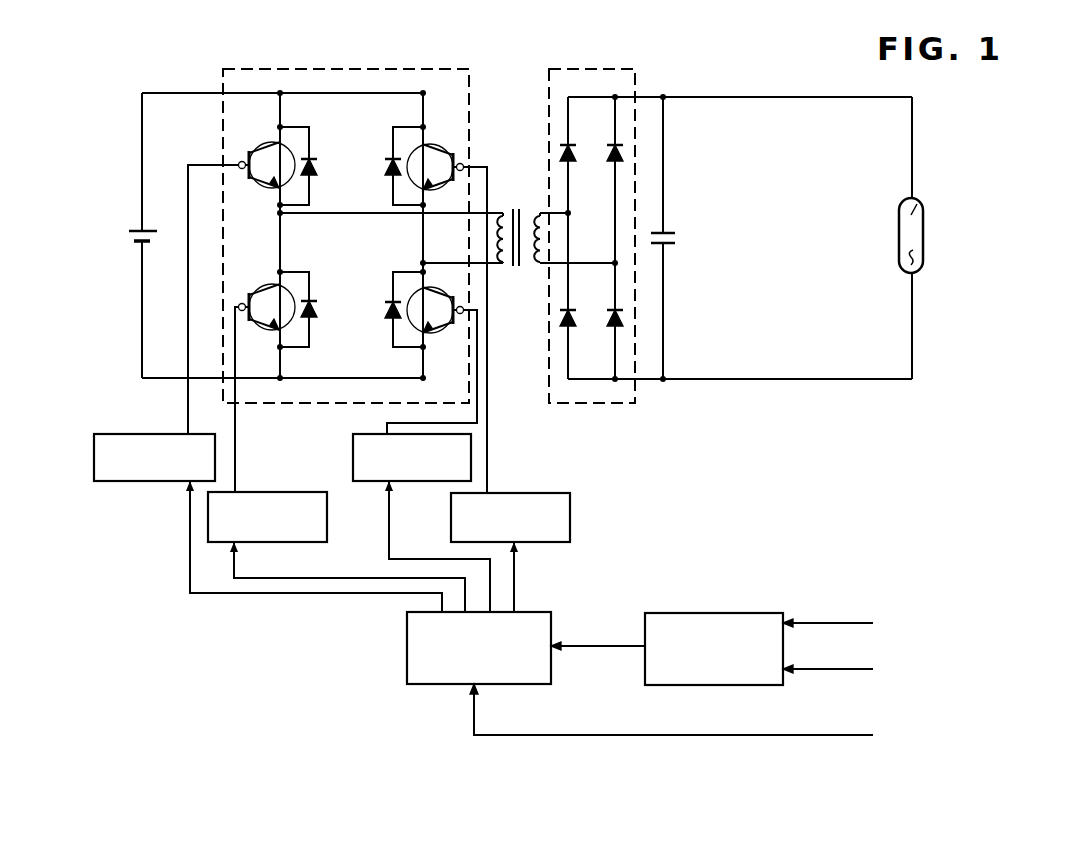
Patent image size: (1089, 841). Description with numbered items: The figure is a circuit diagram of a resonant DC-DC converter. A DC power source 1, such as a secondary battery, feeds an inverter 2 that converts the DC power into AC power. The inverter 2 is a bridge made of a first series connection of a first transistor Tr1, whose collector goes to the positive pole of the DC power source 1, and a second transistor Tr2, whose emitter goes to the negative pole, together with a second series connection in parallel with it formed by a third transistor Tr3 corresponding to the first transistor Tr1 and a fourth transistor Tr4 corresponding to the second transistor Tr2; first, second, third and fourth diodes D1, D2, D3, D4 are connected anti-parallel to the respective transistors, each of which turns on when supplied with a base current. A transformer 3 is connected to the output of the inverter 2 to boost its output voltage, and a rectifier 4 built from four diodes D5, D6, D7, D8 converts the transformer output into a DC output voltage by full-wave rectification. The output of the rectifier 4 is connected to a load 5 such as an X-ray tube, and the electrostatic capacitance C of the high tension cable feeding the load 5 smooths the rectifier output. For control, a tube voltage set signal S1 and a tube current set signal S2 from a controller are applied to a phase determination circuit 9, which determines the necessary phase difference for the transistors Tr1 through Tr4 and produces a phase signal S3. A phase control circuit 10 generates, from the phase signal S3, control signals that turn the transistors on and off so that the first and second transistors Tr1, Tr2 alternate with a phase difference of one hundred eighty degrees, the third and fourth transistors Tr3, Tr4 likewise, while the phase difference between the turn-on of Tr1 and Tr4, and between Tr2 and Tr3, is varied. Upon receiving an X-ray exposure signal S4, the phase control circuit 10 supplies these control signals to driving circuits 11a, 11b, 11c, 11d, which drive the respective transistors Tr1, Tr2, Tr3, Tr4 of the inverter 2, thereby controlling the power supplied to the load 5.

The DC power source 1 is at (126, 236).
The inverter 2 is at (418, 67).
The transformer 3 is at (516, 204).
The rectifier 4 is at (607, 67).
The load 5 is at (925, 245).
The phase determination circuit 9 is at (734, 615).
The phase control circuit 10 is at (407, 651).
The driving circuit 11a is at (143, 483).
The driving circuit 11b is at (288, 492).
The driving circuit 11c is at (541, 493).
The driving circuit 11d is at (366, 483).
The electrostatic capacitance C is at (670, 237).
The first diode D1 is at (315, 164).
The second diode D2 is at (315, 306).
The third diode D3 is at (392, 170).
The fourth diode D4 is at (392, 314).
The diode D5 is at (576, 147).
The diode D6 is at (609, 162).
The diode D7 is at (585, 303).
The diode D8 is at (614, 327).
The first transistor Tr1 is at (255, 151).
The second transistor Tr2 is at (255, 293).
The third transistor Tr3 is at (452, 140).
The fourth transistor Tr4 is at (444, 330).
The tube voltage set signal S1 is at (898, 625).
The tube current set signal S2 is at (901, 673).
The phase signal S3 is at (598, 635).
The X-ray exposure signal S4 is at (751, 720).